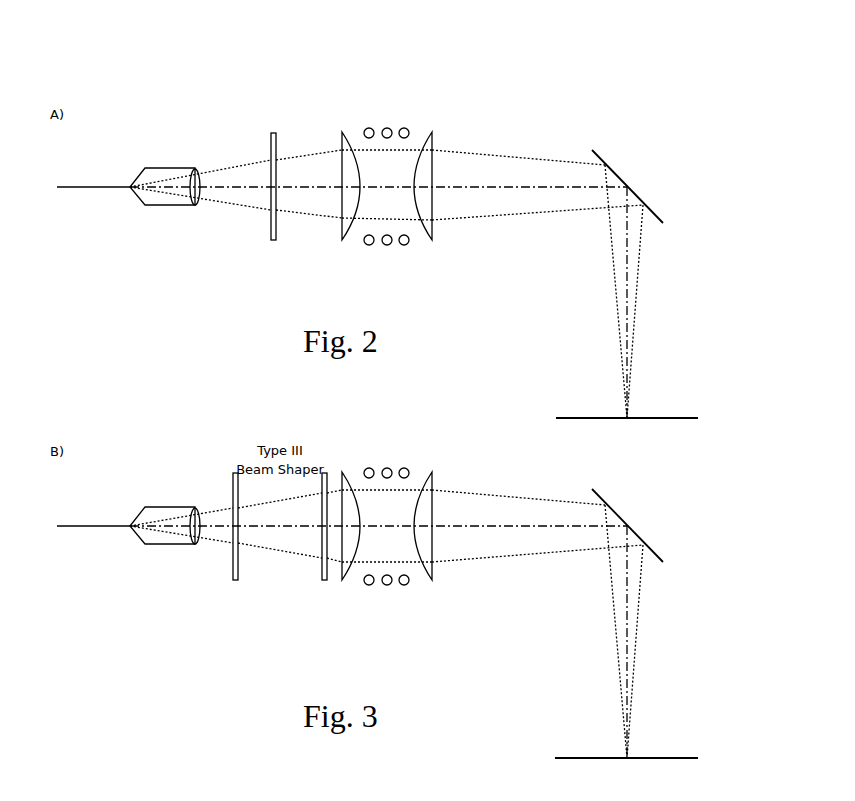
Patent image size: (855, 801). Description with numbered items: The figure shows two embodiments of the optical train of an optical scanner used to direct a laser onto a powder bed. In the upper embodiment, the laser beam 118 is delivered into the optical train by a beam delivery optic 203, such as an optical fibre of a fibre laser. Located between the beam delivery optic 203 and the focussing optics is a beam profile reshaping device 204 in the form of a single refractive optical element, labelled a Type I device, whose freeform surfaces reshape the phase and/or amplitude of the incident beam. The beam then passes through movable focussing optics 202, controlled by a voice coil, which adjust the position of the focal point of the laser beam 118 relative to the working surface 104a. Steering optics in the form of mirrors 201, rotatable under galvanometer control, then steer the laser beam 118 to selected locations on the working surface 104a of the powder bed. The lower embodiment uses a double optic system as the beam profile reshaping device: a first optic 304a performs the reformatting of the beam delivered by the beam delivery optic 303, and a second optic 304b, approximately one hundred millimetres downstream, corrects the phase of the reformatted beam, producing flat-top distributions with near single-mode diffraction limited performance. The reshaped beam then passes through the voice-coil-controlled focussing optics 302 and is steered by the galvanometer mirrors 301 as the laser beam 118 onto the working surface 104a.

In FIG. 2, the mirrors 201 is at (605, 156).
In FIG. 2, the focussing optics 202 is at (411, 115).
In FIG. 2, the beam delivery optic 203 is at (136, 201).
In FIG. 2, the beam profile reshaping device 204 is at (270, 146).
In FIG. 2, the laser beam 118 is at (646, 268).
In FIG. 3, the laser beam 118 is at (656, 605).
In FIG. 2, the working surface 104a is at (658, 416).
In FIG. 3, the working surface 104a is at (671, 756).
In FIG. 3, the mirrors 301 is at (618, 494).
In FIG. 3, the focussing optics 302 is at (395, 461).
In FIG. 3, the beam delivery optic 303 is at (147, 541).
In FIG. 3, the first optic 304a is at (230, 476).
In FIG. 3, the second optic 304b is at (326, 481).